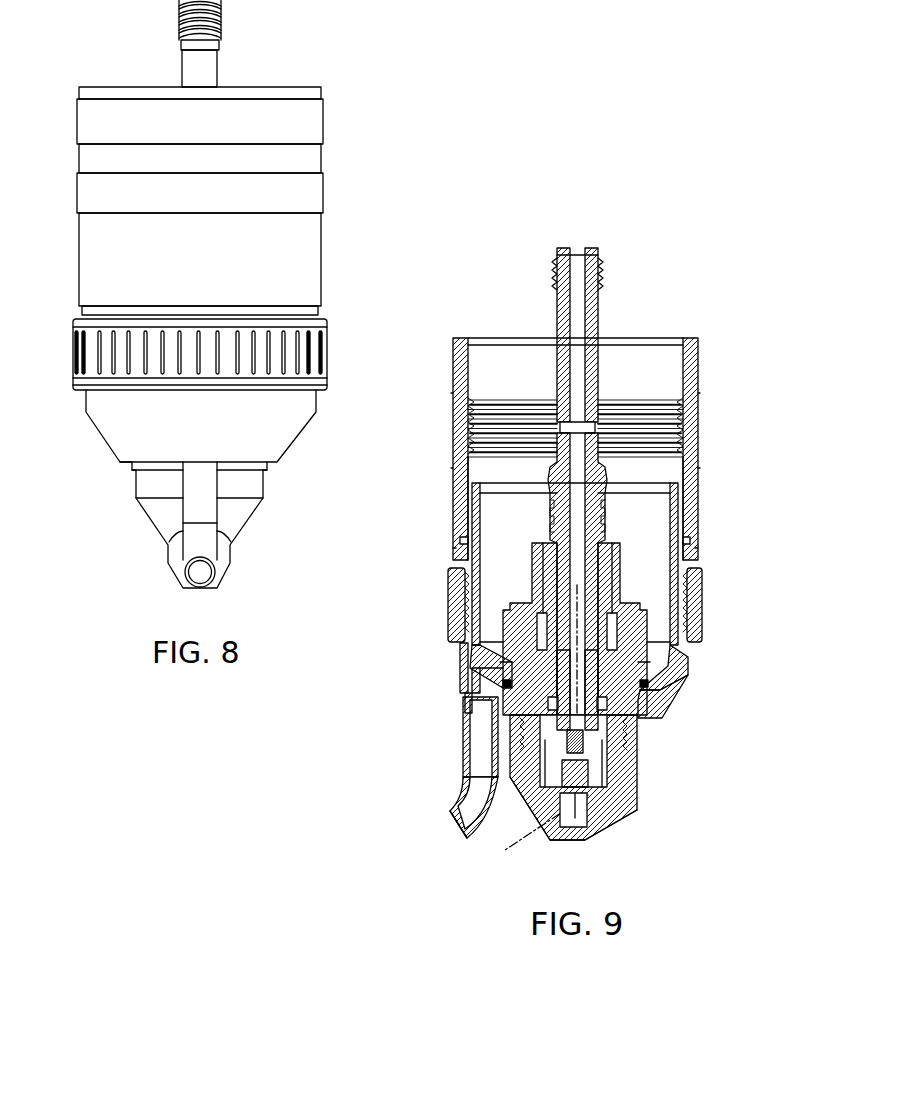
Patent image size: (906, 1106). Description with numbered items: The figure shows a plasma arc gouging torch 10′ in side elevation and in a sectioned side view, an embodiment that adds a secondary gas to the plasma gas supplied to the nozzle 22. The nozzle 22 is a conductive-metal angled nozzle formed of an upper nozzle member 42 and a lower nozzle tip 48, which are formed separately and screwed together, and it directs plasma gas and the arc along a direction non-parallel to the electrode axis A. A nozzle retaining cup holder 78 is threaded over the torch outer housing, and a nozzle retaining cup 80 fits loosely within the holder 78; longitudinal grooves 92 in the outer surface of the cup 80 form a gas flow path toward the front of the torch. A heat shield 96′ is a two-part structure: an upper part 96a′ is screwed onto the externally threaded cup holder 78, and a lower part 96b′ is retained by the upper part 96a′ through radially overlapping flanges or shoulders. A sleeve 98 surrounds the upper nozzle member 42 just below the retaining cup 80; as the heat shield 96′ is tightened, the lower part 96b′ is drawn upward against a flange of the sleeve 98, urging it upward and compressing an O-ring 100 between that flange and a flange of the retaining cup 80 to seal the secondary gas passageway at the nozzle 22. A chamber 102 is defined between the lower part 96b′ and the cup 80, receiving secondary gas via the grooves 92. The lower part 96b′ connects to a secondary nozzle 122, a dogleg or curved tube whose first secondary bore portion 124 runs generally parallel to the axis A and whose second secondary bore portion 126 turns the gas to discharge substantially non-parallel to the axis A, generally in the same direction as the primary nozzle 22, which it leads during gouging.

In FIG. 8, the plasma arc gouging torch 10′ is at (328, 87).
In FIG. 9, the plasma arc gouging torch 10′ is at (674, 327).
In FIG. 8, the nozzle 22 is at (140, 513).
In FIG. 9, the nozzle 22 is at (639, 753).
In FIG. 8, the secondary nozzle 122 is at (183, 571).
In FIG. 9, the secondary nozzle 122 is at (463, 803).
In FIG. 9, the nozzle retaining cup holder 78 is at (462, 363).
In FIG. 9, the longitudinal grooves 92 is at (472, 518).
In FIG. 9, the nozzle retaining cup 80 is at (479, 552).
In FIG. 9, the axis of the electrode assembly A is at (574, 603).
In FIG. 9, the upper nozzle member 42 is at (612, 630).
In FIG. 9, the heat shield 96′ is at (444, 612).
In FIG. 9, the upper part of the heat shield 96a′ is at (703, 603).
In FIG. 9, the lower part of the heat shield 96b′ is at (468, 673).
In FIG. 9, the chamber 102 is at (481, 687).
In FIG. 9, the first secondary bore portion 124 is at (483, 730).
In FIG. 9, the second secondary bore portion 126 is at (463, 814).
In FIG. 9, the O-ring 100 is at (641, 682).
In FIG. 9, the sleeve 98 is at (641, 717).
In FIG. 9, the lower nozzle tip 48 is at (613, 811).